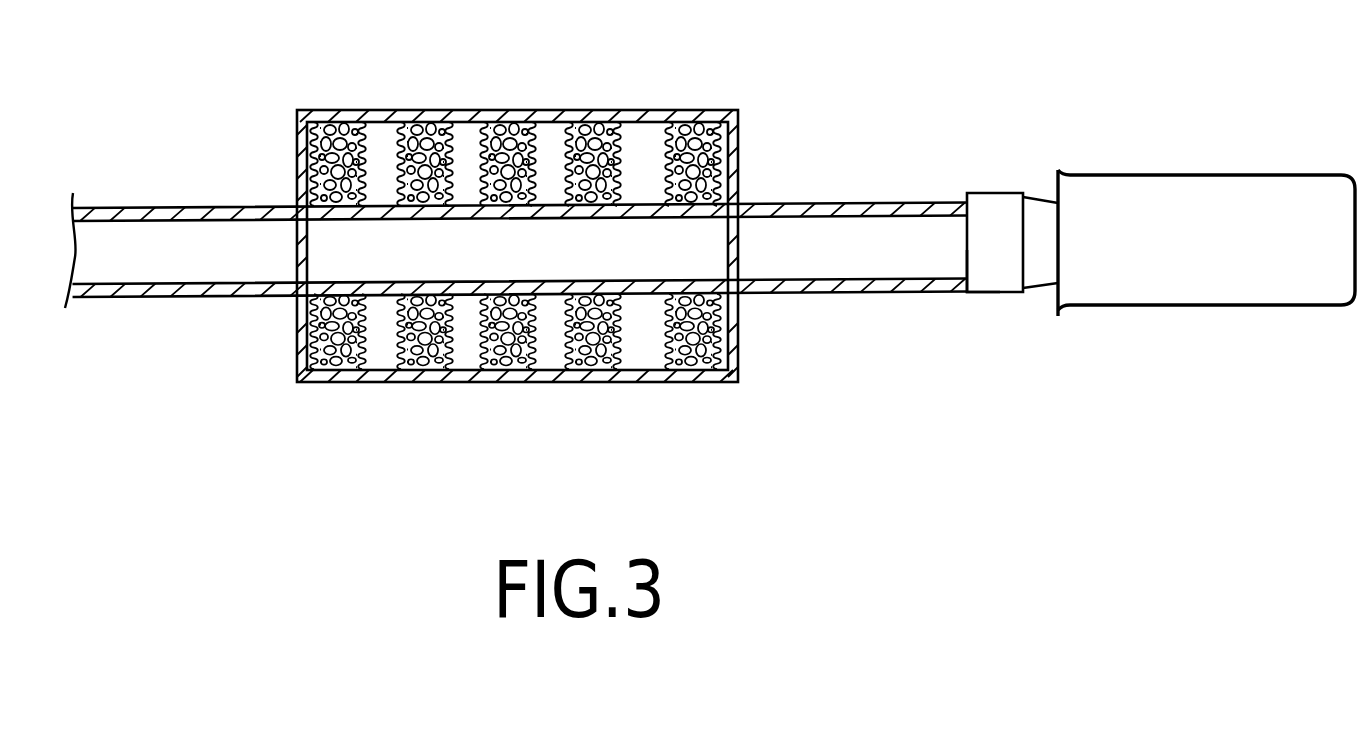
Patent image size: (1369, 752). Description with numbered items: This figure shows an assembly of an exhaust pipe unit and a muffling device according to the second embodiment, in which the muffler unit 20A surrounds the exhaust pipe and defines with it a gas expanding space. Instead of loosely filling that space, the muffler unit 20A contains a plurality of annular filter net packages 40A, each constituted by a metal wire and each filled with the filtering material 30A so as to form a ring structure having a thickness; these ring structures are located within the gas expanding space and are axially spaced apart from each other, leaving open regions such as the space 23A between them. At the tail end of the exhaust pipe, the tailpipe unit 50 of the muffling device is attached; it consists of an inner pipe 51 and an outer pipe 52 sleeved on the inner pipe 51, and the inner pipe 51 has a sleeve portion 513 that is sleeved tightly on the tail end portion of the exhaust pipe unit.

The muffler unit 20A is at (637, 113).
The filtering material 30A is at (485, 139).
The annular filter net package 40A is at (472, 163).
The lower chamber 23A is at (652, 338).
The inner pipe 51 is at (1037, 215).
The sleeve portion 513 is at (993, 260).
The outer pipe 52 is at (1128, 207).
The tailpipe unit 50 is at (1244, 160).